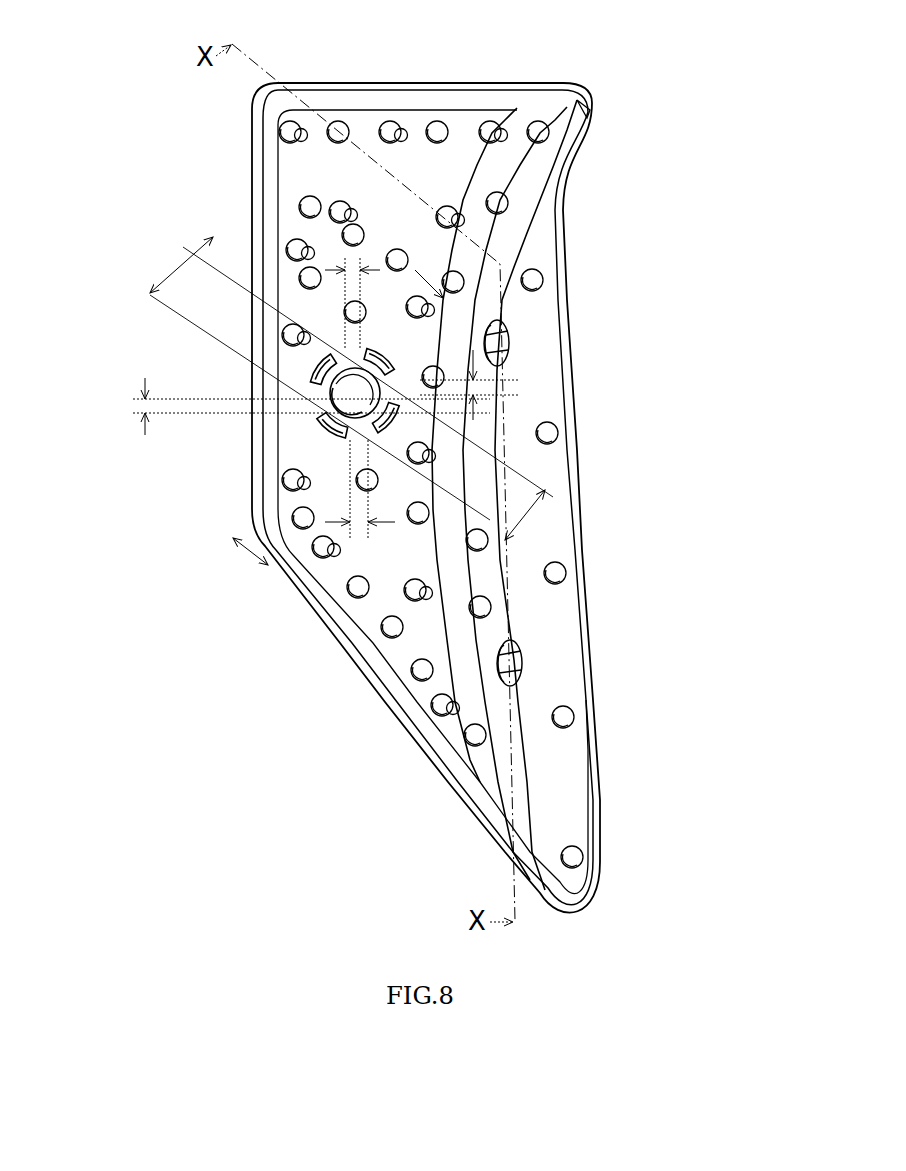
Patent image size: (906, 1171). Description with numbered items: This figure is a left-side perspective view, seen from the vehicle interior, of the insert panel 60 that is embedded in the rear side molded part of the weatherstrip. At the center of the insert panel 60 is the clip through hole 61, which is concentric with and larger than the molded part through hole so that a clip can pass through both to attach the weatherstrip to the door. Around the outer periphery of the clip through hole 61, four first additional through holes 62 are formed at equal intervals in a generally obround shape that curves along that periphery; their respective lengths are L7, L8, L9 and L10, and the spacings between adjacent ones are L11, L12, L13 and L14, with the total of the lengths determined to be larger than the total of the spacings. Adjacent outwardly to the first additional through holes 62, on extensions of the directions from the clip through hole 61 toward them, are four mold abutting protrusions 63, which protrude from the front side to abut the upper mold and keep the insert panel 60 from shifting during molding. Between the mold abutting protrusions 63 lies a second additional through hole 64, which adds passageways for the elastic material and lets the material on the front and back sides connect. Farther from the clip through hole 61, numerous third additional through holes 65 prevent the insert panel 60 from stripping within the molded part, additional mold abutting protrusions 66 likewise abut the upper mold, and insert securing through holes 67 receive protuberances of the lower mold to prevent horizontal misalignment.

The insert panel 60 is at (712, 75).
The clip through hole 61 is at (330, 400).
The first additional through hole 62 is at (312, 362).
The mold abutting protrusion 63 is at (290, 334).
The second additional through hole 64 is at (345, 330).
The third additional through hole 65 is at (428, 122).
The additional mold abutting protrusion 66 is at (488, 122).
The insert securing through hole 67 is at (340, 122).
The length of first additional through hole L7 is at (450, 298).
The length of first additional through hole L8 is at (527, 515).
The length of first additional through hole L9 is at (252, 558).
The length of first additional through hole L10 is at (178, 268).
The spacing between first additional through holes L11 is at (480, 390).
The spacing between first additional through holes L12 is at (352, 530).
The spacing between first additional through holes L13 is at (135, 399).
The spacing between first additional through holes L14 is at (345, 262).